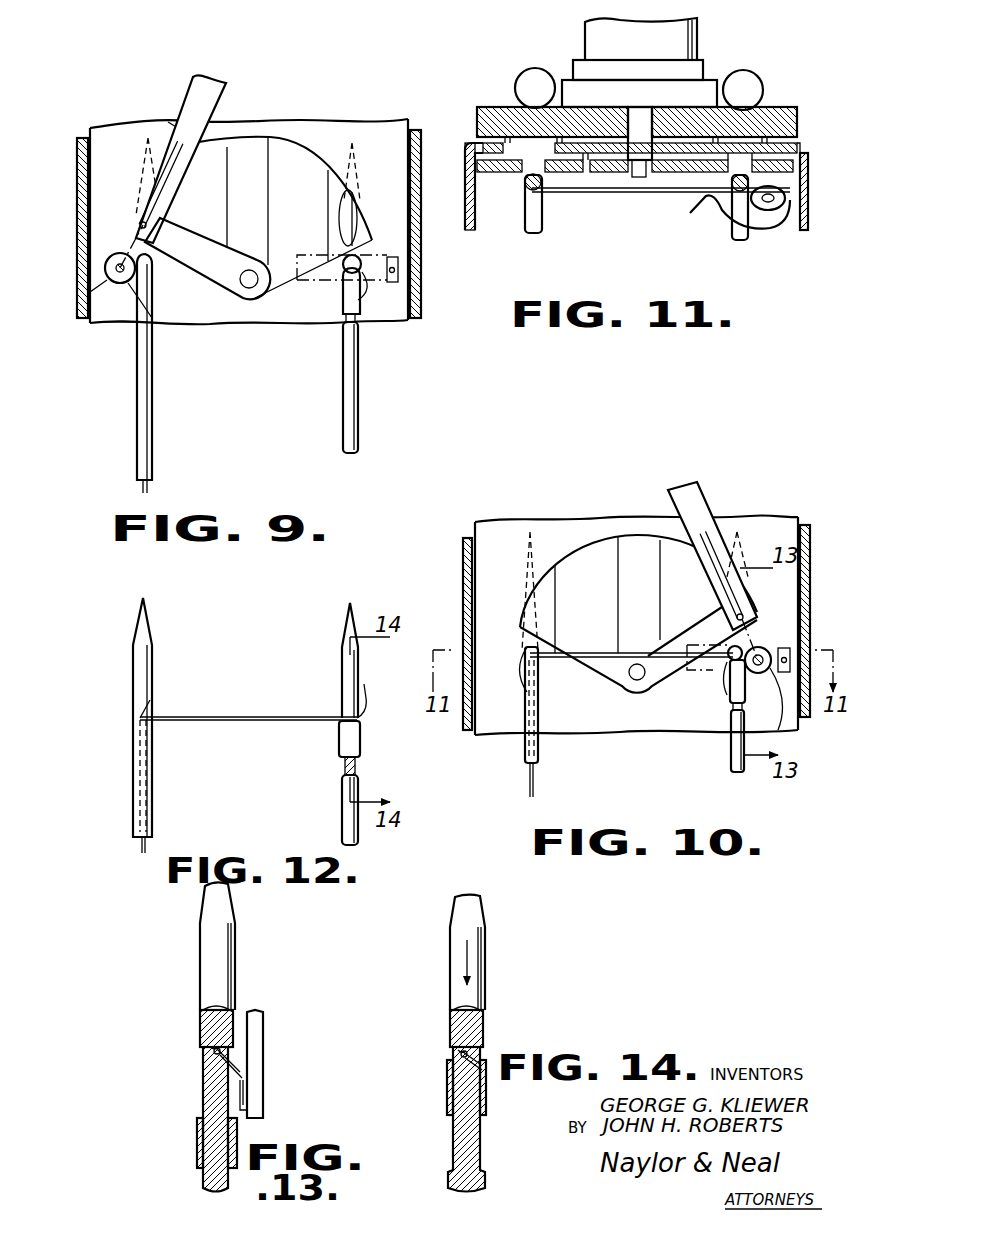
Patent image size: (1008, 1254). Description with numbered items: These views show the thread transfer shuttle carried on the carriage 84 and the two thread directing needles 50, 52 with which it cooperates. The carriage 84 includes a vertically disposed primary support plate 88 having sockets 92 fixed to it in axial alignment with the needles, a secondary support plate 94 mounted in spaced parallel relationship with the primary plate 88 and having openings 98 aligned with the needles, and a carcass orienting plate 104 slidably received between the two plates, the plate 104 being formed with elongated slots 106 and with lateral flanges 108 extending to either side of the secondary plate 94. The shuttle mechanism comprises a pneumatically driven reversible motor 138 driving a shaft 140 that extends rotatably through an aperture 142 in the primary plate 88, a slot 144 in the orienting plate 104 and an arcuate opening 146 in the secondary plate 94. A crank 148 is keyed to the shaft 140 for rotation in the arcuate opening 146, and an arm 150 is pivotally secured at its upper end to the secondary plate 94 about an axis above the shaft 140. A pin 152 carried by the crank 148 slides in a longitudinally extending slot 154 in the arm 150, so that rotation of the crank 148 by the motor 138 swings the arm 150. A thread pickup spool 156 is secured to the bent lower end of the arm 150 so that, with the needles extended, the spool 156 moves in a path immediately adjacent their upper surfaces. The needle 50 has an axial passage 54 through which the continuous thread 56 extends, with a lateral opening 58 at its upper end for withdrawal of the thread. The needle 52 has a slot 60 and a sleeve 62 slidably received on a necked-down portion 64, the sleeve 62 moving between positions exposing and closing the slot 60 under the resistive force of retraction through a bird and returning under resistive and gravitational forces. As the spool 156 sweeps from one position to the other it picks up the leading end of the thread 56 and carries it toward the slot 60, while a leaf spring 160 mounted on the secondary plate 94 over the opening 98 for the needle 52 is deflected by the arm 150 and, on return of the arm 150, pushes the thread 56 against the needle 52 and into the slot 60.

In FIG. 9, the thread directing needle 50 is at (153, 405).
In FIG. 11, the thread directing needle 50 is at (540, 232).
In FIG. 10, the thread directing needle 50 is at (524, 768).
In FIG. 12, the thread directing needle 50 is at (134, 683).
In FIG. 9, the thread directing needle 52 is at (343, 424).
In FIG. 11, the thread directing needle 52 is at (740, 240).
In FIG. 10, the thread directing needle 52 is at (733, 770).
In FIG. 12, the thread directing needle 52 is at (343, 822).
In FIG. 13, the thread directing needle 52 is at (237, 968).
In FIG. 14, the thread directing needle 52 is at (487, 968).
In FIG. 12, the axial passage 54 is at (143, 762).
In FIG. 9, the thread 56 is at (149, 488).
In FIG. 11, the thread 56 is at (627, 192).
In FIG. 10, the thread 56 is at (600, 653).
In FIG. 12, the thread 56 is at (250, 716).
In FIG. 13, the thread 56 is at (214, 1051).
In FIG. 14, the thread 56 is at (462, 1053).
In FIG. 12, the lateral opening 58 is at (152, 700).
In FIG. 9, the slot 60 is at (358, 258).
In FIG. 10, the slot 60 is at (735, 653).
In FIG. 13, the slot 60 is at (240, 1057).
In FIG. 14, the slot 60 is at (480, 1055).
In FIG. 9, the sleeve 62 is at (348, 307).
In FIG. 10, the sleeve 62 is at (737, 685).
In FIG. 12, the sleeve 62 is at (340, 742).
In FIG. 13, the sleeve 62 is at (197, 1140).
In FIG. 14, the sleeve 62 is at (486, 1104).
In FIG. 12, the necked-down portion 64 is at (345, 767).
In FIG. 13, the necked-down portion 64 is at (203, 1094).
In FIG. 14, the necked-down portion 64 is at (482, 1150).
In FIG. 11, the carriage 84 is at (505, 107).
In FIG. 9, the primary support plate 88 is at (245, 148).
In FIG. 11, the primary support plate 88 is at (797, 120).
In FIG. 10, the primary support plate 88 is at (638, 545).
In FIG. 11, the sockets 92 is at (537, 75).
In FIG. 9, the secondary support plate 94 is at (377, 132).
In FIG. 11, the secondary support plate 94 is at (492, 173).
In FIG. 10, the secondary support plate 94 is at (497, 534).
In FIG. 9, the openings 98 is at (157, 307).
In FIG. 11, the openings 98 is at (795, 166).
In FIG. 10, the openings 98 is at (520, 688).
In FIG. 9, the carcass orienting plate 104 is at (312, 204).
In FIG. 11, the carcass orienting plate 104 is at (800, 148).
In FIG. 10, the carcass orienting plate 104 is at (594, 548).
In FIG. 9, the elongated slots 106 is at (333, 223).
In FIG. 9, the lateral flanges 108 is at (77, 205).
In FIG. 11, the lateral flanges 108 is at (468, 232).
In FIG. 10, the lateral flanges 108 is at (636, 627).
In FIG. 11, the reversible motor 138 is at (697, 30).
In FIG. 9, the shaft 140 is at (246, 289).
In FIG. 11, the shaft 140 is at (635, 110).
In FIG. 10, the shaft 140 is at (637, 672).
In FIG. 11, the aperture 142 is at (648, 112).
In FIG. 9, the slot 144 is at (230, 160).
In FIG. 9, the arcuate opening 146 is at (284, 150).
In FIG. 11, the arcuate opening 146 is at (587, 173).
In FIG. 10, the arcuate opening 146 is at (578, 556).
In FIG. 9, the crank 148 is at (213, 277).
In FIG. 11, the crank 148 is at (675, 175).
In FIG. 10, the crank 148 is at (700, 620).
In FIG. 9, the arm 150 is at (193, 86).
In FIG. 10, the arm 150 is at (700, 498).
In FIG. 13, the arm 150 is at (263, 1015).
In FIG. 9, the pin 152 is at (140, 223).
In FIG. 10, the pin 152 is at (745, 618).
In FIG. 9, the longitudinally extending slot 154 is at (170, 122).
In FIG. 9, the thread pickup spool 156 is at (105, 278).
In FIG. 11, the thread pickup spool 156 is at (786, 198).
In FIG. 10, the thread pickup spool 156 is at (771, 655).
In FIG. 13, the thread pickup spool 156 is at (250, 1092).
In FIG. 9, the leaf spring 160 is at (325, 281).
In FIG. 11, the leaf spring 160 is at (773, 230).
In FIG. 10, the leaf spring 160 is at (705, 675).